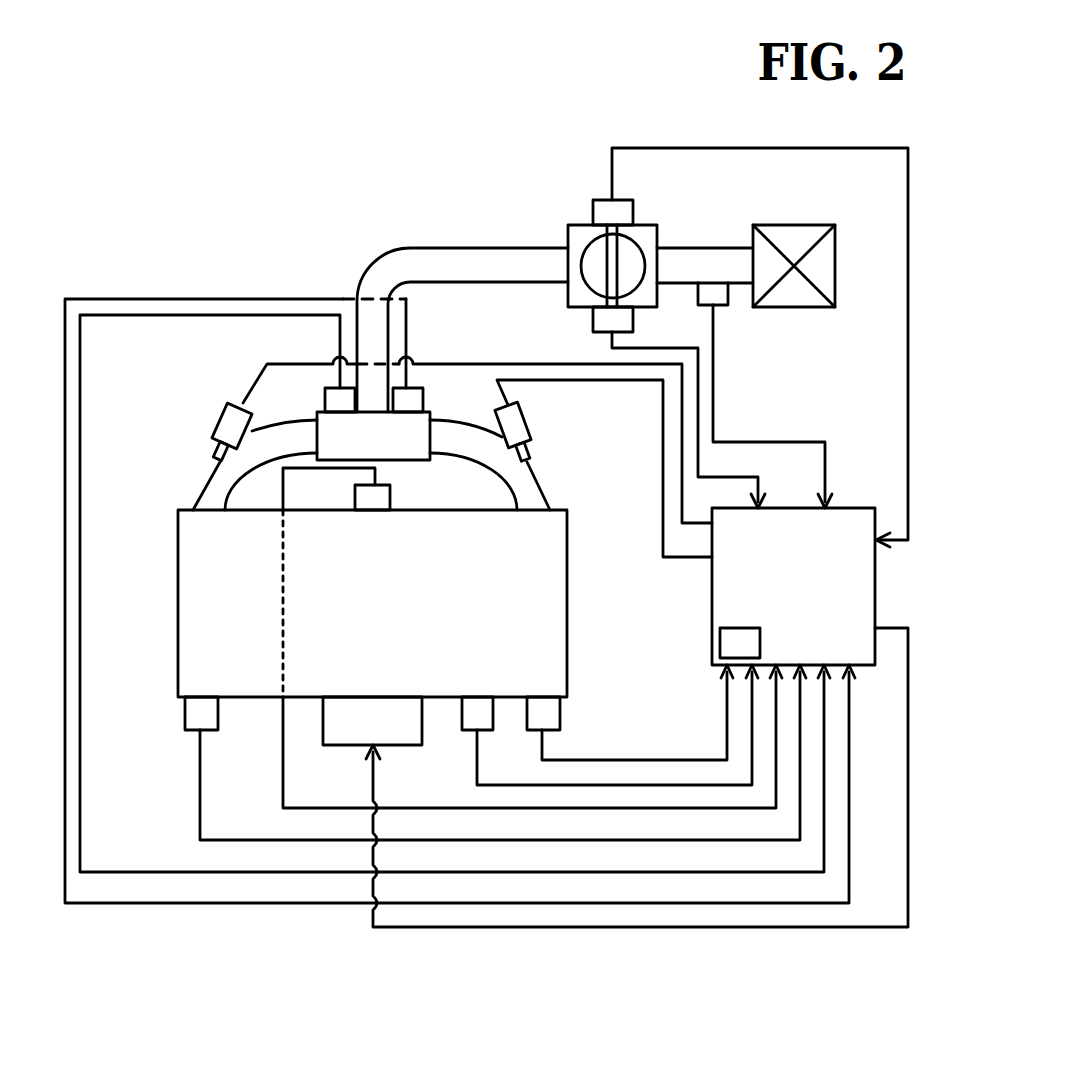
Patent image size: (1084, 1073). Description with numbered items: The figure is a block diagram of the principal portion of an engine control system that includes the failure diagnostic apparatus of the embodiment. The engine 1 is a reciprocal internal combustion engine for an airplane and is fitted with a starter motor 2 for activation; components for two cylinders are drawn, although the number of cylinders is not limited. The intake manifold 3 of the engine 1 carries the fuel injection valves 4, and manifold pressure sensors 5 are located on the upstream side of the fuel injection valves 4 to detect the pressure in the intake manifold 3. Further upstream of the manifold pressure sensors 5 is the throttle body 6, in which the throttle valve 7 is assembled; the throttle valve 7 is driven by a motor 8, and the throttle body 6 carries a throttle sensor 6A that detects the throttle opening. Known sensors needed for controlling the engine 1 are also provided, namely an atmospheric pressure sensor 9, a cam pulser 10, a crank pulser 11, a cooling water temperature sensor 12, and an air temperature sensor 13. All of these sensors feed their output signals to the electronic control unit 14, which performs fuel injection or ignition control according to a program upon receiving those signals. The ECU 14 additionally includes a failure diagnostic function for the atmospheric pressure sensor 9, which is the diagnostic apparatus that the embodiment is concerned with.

The engine 1 is at (178, 623).
The starter motor 2 is at (333, 745).
The intake manifold 3 is at (207, 495).
The fuel injection valve 4 is at (218, 420).
The manifold pressure sensor 5 is at (325, 400).
The throttle body 6 is at (565, 235).
The throttle sensor 6A is at (593, 322).
The throttle valve 7 is at (630, 262).
The motor 8 is at (600, 198).
The atmospheric pressure sensor 9 is at (720, 648).
The cam pulser 10 is at (193, 730).
The crank pulser 11 is at (392, 495).
The cooling water temperature sensor 12 is at (470, 732).
The air temperature sensor 13 is at (725, 307).
The electronic control unit (ECU) 14 is at (710, 600).